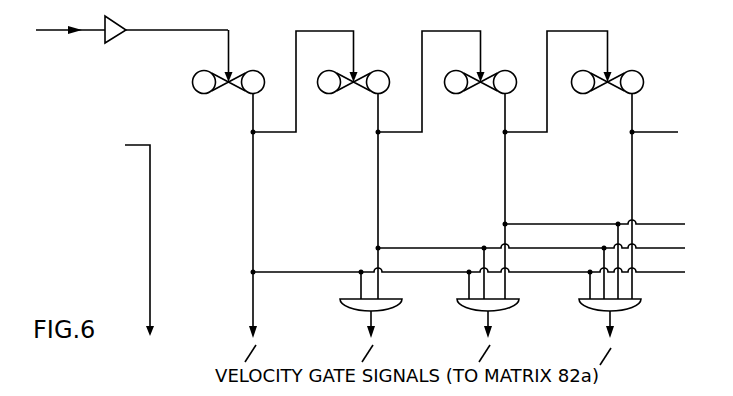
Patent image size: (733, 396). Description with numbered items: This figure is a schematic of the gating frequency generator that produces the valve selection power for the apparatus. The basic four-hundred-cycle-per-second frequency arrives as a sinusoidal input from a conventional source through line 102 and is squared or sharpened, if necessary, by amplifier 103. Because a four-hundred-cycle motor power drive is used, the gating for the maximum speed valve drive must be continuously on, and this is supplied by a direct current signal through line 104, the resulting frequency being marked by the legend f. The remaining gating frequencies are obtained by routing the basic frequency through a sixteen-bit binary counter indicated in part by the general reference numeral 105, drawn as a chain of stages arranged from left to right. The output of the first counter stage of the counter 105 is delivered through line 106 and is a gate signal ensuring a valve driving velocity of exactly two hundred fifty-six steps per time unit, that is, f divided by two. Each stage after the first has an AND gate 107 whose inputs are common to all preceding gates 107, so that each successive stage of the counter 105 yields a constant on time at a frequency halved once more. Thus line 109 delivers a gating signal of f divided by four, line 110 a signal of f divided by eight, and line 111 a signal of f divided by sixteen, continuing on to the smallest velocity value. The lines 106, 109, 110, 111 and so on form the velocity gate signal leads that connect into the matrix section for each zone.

The line 102 is at (55, 28).
The amplifier 103 is at (125, 19).
The line 104 is at (150, 246).
The sixteen-bit binary counter 105 is at (408, 24).
The line 106 is at (253, 310).
The AND gate 107 is at (380, 305).
The line 109 is at (374, 325).
The line 110 is at (492, 325).
The line 111 is at (612, 328).